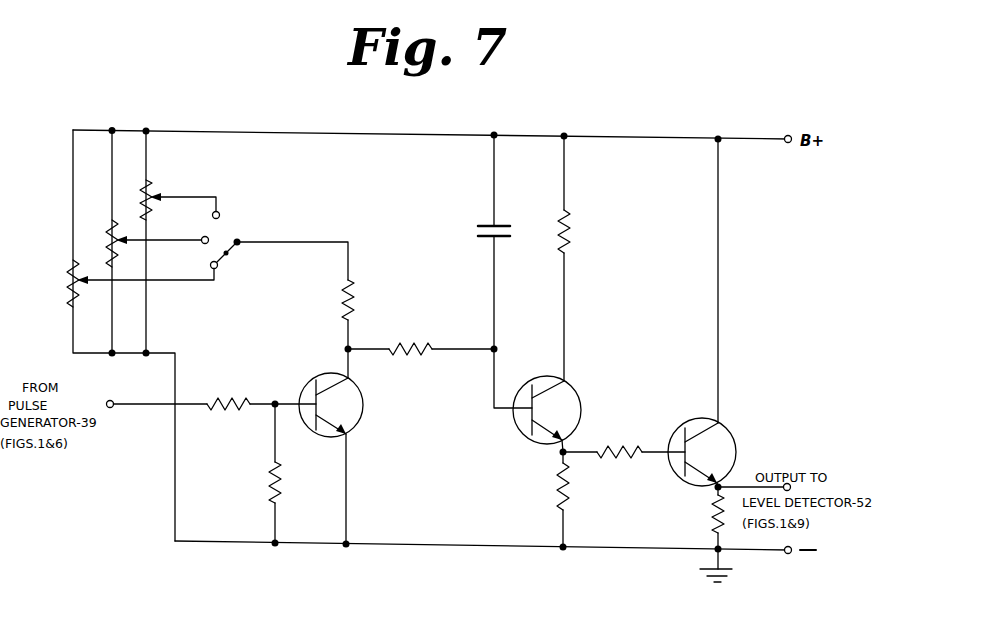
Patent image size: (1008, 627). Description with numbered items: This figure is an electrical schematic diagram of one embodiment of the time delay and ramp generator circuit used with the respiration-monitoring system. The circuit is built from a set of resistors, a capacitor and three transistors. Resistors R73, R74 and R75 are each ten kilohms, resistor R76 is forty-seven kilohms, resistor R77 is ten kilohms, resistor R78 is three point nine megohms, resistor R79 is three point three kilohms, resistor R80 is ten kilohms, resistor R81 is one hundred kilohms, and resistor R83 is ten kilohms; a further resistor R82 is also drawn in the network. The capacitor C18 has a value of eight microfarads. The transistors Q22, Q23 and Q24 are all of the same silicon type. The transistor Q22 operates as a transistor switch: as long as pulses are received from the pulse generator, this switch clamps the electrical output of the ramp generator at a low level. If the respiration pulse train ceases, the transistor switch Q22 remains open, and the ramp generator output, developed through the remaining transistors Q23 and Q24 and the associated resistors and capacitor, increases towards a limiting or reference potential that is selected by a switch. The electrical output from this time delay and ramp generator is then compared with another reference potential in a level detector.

The resistor R73 is at (70, 281).
The resistor R74 is at (108, 238).
The resistor R75 is at (152, 186).
The resistor R76 is at (222, 400).
The resistor R77 is at (270, 479).
The resistor R78 is at (354, 300).
The resistor R79 is at (412, 345).
The resistor R80 is at (570, 223).
The resistor R81 is at (571, 482).
The resistor R82 is at (608, 445).
The resistor R83 is at (713, 516).
The capacitor C18 is at (482, 222).
The transistor switch Q22 is at (366, 408).
The transistor Q23 is at (575, 385).
The transistor Q24 is at (731, 433).